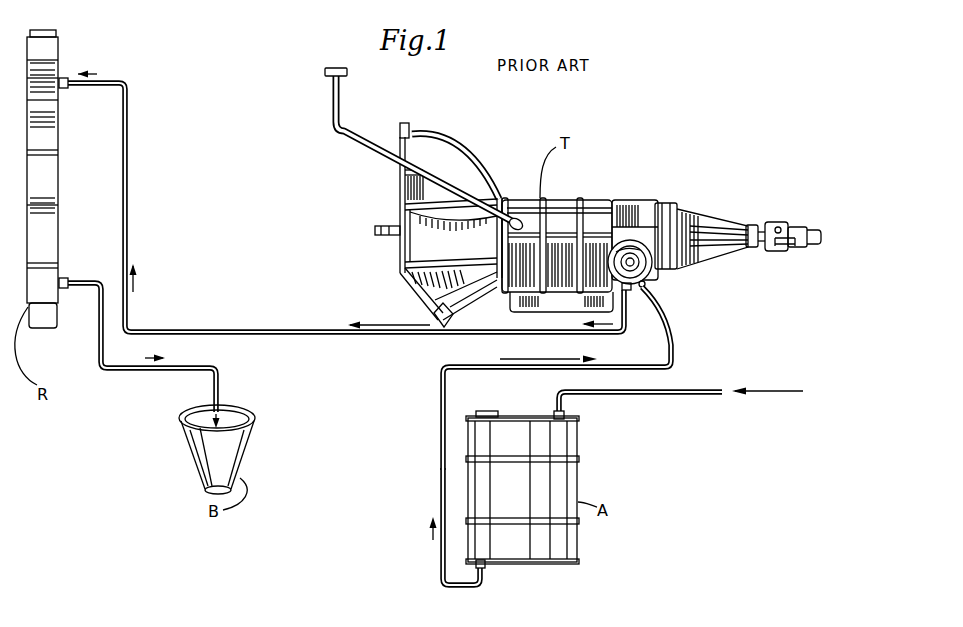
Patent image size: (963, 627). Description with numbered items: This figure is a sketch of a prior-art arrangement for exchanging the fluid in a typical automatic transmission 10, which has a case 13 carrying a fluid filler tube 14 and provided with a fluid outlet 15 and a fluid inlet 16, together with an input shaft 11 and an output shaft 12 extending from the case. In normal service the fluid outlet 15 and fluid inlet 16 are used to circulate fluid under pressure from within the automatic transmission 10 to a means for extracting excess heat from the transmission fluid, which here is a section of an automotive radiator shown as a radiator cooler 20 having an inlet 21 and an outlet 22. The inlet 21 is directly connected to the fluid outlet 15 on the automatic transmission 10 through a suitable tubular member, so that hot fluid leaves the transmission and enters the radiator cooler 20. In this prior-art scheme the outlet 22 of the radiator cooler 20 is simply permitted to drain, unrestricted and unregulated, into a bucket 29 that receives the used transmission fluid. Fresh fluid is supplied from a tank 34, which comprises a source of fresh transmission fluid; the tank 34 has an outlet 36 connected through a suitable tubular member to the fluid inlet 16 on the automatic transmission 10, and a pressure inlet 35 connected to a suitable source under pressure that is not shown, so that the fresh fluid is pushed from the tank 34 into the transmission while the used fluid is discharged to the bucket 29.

The automatic transmission 10 is at (587, 178).
The input shaft 11 is at (378, 225).
The output shaft 12 is at (797, 223).
The case 13 is at (613, 200).
The fluid filler tube 14 is at (341, 108).
The fluid outlet 15 is at (657, 318).
The fluid inlet 16 is at (647, 293).
The radiator cooler 20 is at (61, 76).
The inlet 21 is at (68, 82).
The outlet 22 is at (66, 288).
The bucket 29 is at (190, 462).
The tank 34 is at (577, 485).
The pressure inlet 35 is at (556, 412).
The outlet 36 is at (490, 567).